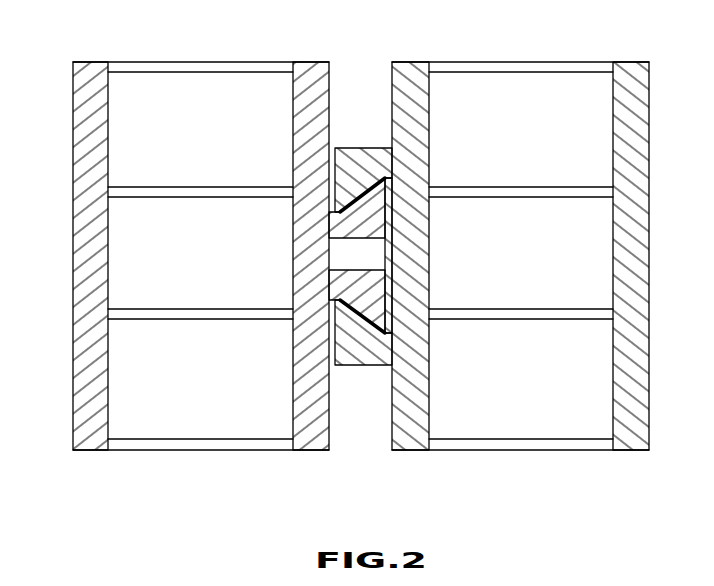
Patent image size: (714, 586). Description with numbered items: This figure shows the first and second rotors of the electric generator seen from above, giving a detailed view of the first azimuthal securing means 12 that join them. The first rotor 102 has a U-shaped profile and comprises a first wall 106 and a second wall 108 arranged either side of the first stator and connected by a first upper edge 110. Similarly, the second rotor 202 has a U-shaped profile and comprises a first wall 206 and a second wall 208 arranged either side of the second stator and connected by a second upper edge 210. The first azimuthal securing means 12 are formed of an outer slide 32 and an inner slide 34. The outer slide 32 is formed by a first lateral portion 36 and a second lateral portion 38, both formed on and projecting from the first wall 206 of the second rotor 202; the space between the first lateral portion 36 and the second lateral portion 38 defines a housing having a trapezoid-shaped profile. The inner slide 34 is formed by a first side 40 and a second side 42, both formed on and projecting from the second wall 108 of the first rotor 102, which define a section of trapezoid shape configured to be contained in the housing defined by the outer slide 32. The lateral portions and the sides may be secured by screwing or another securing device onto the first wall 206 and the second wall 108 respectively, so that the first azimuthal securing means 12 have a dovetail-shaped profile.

The first azimuthal securing means 12 is at (360, 219).
The outer slide 32 is at (332, 184).
The inner slide 34 is at (396, 223).
The first lateral portion 36 is at (373, 160).
The second lateral portion 38 is at (361, 358).
The first side 40 is at (384, 181).
The second side 42 is at (385, 331).
The first rotor 102 is at (194, 454).
The first wall of the first rotor 106 is at (93, 240).
The second wall of the first rotor 108 is at (305, 441).
The first upper edge 110 is at (195, 92).
The second rotor 202 is at (466, 455).
The first wall of the second rotor 206 is at (408, 441).
The second wall of the second rotor 208 is at (632, 252).
The second upper edge 210 is at (517, 92).